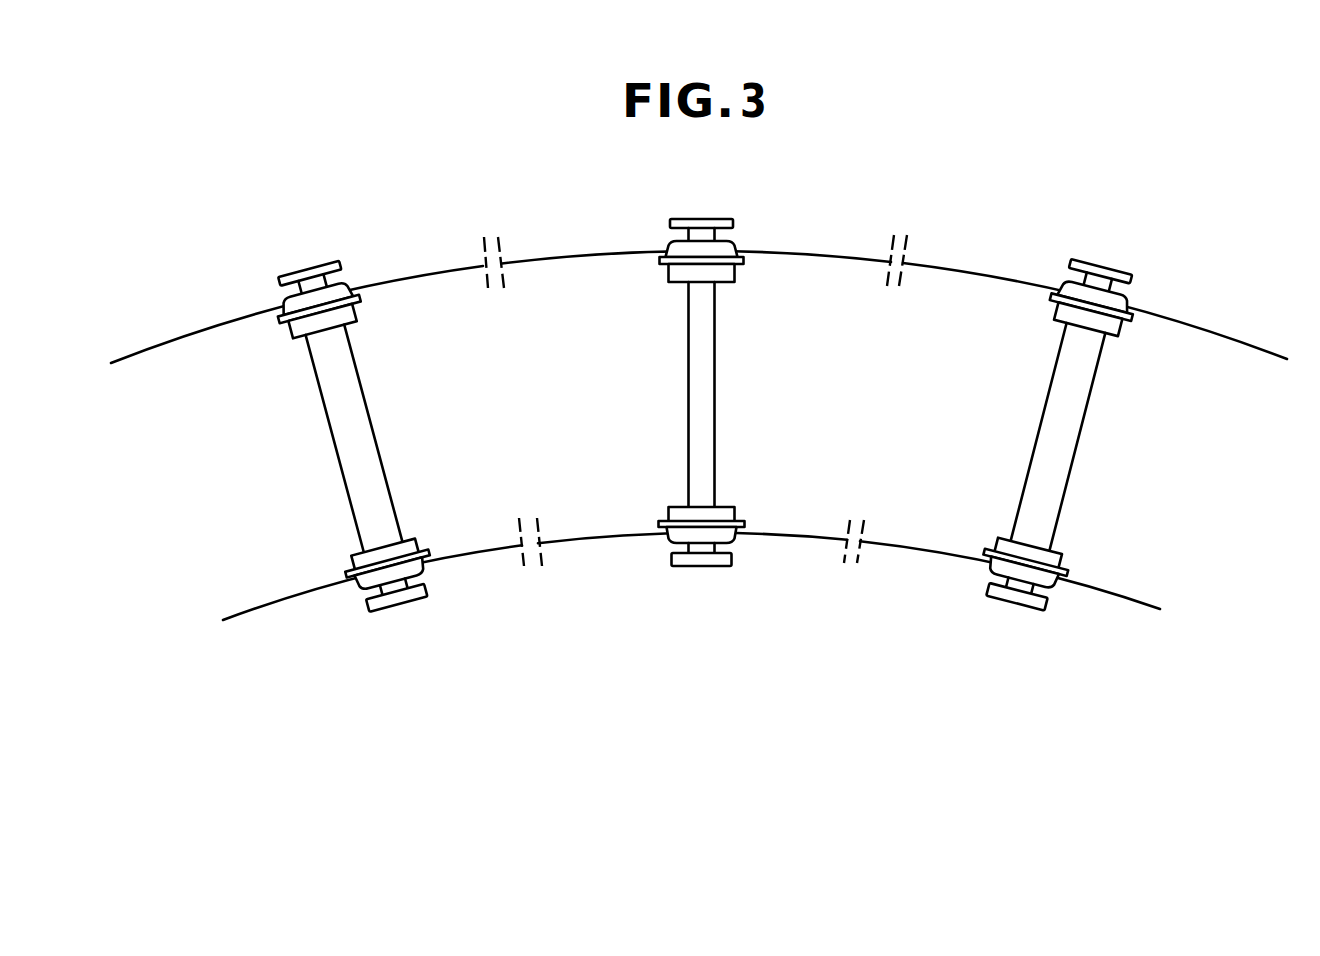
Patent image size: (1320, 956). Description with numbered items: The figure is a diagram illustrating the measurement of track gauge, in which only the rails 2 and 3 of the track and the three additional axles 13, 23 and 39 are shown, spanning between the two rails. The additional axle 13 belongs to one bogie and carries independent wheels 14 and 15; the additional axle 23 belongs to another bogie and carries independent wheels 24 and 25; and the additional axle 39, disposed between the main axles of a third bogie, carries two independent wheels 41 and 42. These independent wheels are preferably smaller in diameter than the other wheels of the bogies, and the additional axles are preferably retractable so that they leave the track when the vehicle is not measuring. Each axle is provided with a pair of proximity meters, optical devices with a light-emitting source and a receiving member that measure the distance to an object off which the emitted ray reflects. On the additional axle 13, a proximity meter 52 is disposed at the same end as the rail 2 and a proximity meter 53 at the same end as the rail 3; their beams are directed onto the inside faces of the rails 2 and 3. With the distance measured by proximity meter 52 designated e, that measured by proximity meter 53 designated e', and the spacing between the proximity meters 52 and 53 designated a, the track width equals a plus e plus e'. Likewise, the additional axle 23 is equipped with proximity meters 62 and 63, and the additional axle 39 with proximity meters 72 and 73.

The rail 2 is at (260, 608).
The rail 3 is at (178, 338).
The third axle 13 is at (347, 433).
The independent wheel 14 is at (337, 288).
The independent wheel 15 is at (423, 567).
The proximity meter 52 is at (414, 522).
The proximity meter 53 is at (338, 317).
The third axle 39 is at (692, 386).
The independent wheel 41 is at (722, 250).
The independent wheel 42 is at (720, 535).
The proximity meter 72 is at (718, 512).
The proximity meter 73 is at (722, 270).
The third axle 23 is at (1050, 414).
The independent wheel 24 is at (1112, 302).
The independent wheel 25 is at (1050, 578).
The proximity meter 62 is at (1062, 558).
The proximity meter 63 is at (1105, 322).